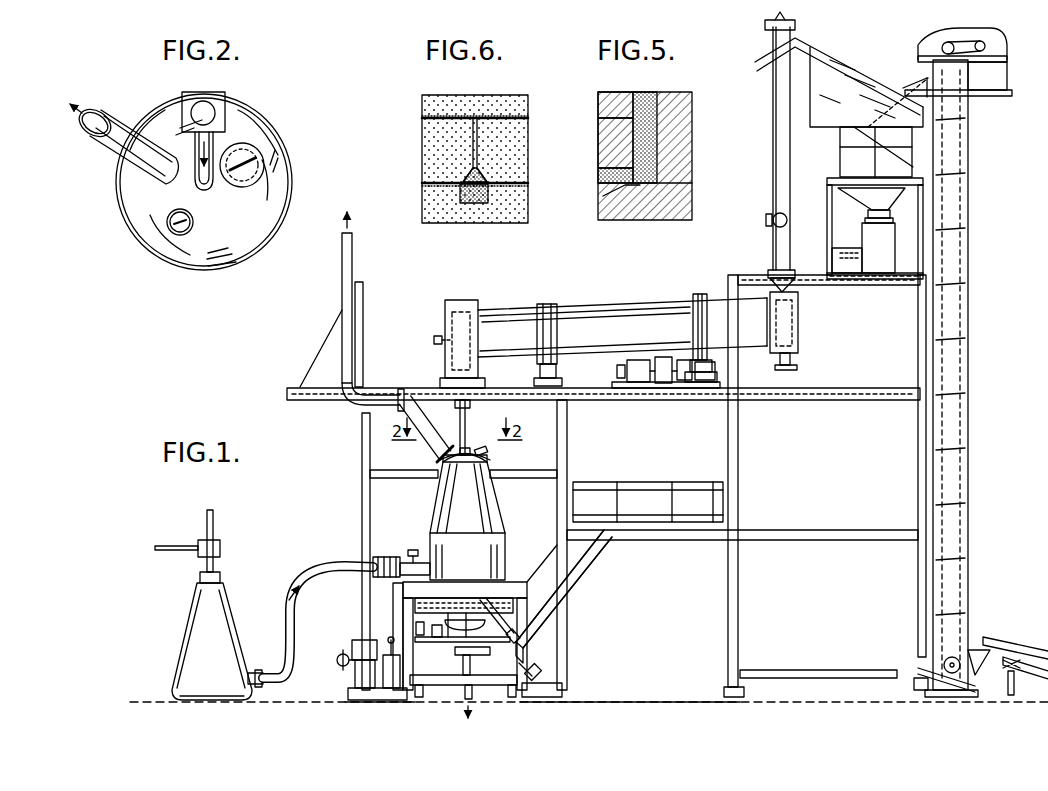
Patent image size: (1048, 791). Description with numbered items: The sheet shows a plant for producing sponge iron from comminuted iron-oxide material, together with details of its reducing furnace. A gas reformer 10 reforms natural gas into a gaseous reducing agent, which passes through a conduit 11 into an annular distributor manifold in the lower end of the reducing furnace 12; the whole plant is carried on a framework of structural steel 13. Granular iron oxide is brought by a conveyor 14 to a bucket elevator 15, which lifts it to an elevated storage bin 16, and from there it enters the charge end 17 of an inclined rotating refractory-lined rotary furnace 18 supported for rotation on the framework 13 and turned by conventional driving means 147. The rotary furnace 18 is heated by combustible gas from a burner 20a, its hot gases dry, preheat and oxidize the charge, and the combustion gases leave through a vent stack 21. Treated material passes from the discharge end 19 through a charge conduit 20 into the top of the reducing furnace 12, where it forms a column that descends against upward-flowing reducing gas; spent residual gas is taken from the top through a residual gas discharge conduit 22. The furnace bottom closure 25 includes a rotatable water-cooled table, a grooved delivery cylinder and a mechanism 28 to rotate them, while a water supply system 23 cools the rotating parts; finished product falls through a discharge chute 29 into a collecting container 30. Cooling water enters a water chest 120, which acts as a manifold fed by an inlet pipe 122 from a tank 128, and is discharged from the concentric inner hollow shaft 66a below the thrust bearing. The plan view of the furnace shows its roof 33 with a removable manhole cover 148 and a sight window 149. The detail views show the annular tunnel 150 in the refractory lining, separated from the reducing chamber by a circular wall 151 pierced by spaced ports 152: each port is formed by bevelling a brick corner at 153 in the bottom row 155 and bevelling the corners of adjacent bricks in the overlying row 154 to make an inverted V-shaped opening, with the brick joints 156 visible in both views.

In FIG. 1, the gas reformer 10 is at (185, 622).
In FIG. 1, the conduit 11 is at (331, 570).
In FIG. 1, the reducing furnace 12 is at (430, 520).
In FIG. 1, the framework of structural steel 13 is at (512, 580).
In FIG. 1, the conveyor 14 is at (1008, 636).
In FIG. 1, the bucket elevator 15 is at (972, 328).
In FIG. 1, the storage bin 16 is at (858, 203).
In FIG. 1, the charge end 17 is at (800, 330).
In FIG. 1, the rotary furnace 18 is at (616, 306).
In FIG. 1, the discharge end 19 is at (450, 322).
In FIG. 2, the charge conduit 20 is at (226, 132).
In FIG. 1, the charge conduit 20 is at (460, 418).
In FIG. 1, the burner 20a is at (433, 341).
In FIG. 1, the vent stack 21 is at (773, 162).
In FIG. 2, the residual gas discharge conduit 22 is at (122, 145).
In FIG. 1, the residual gas discharge conduit 22 is at (434, 447).
In FIG. 1, the water supply system 23 is at (583, 563).
In FIG. 1, the bottom closure 25 is at (412, 609).
In FIG. 1, the mechanism 28 is at (352, 643).
In FIG. 1, the discharge chute 29 is at (500, 635).
In FIG. 1, the collecting container 30 is at (545, 674).
In FIG. 2, the reducing furnace roof 33 is at (252, 240).
In FIG. 1, the reducing furnace roof 33 is at (474, 455).
In FIG. 1, the inner hollow shaft 66a is at (466, 698).
In FIG. 1, the water chest 120 is at (470, 653).
In FIG. 1, the inlet pipe 122 is at (551, 580).
In FIG. 1, the tank 128 is at (648, 492).
In FIG. 1, the driving means 147 is at (655, 382).
In FIG. 2, the manhole cover 148 is at (246, 174).
In FIG. 2, the sight window 149 is at (171, 231).
In FIG. 5, the annular tunnel 150 is at (650, 135).
In FIG. 5, the circular wall 151 is at (616, 133).
In FIG. 6, the port 152 is at (462, 181).
In FIG. 5, the port 152 is at (616, 176).
In FIG. 5, the bevelled corner 153 is at (633, 194).
In FIG. 6, the row of brick 154 is at (430, 143).
In FIG. 5, the row of brick 154 is at (616, 155).
In FIG. 6, the row of brick 155 is at (483, 218).
In FIG. 5, the row of brick 155 is at (632, 212).
In FIG. 6, the joints 156 is at (428, 117).
In FIG. 5, the joints 156 is at (610, 112).